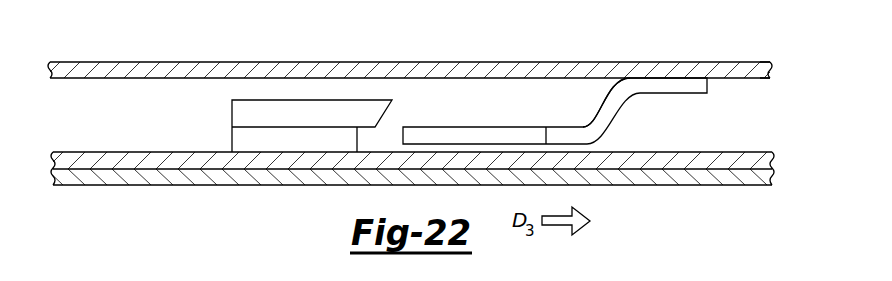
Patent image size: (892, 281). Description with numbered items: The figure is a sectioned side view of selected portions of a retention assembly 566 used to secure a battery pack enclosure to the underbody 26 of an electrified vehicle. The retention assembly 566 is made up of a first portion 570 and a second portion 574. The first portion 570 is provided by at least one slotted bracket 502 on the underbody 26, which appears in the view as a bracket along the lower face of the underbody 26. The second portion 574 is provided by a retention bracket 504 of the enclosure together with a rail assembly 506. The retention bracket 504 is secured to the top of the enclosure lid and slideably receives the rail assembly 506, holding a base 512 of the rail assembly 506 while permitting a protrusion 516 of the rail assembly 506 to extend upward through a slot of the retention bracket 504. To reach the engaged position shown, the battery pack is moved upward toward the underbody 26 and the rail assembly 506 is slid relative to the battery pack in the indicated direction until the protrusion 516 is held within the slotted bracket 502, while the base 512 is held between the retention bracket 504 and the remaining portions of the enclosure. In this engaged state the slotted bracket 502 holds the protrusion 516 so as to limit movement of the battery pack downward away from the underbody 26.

The underbody 26 is at (197, 60).
The retention assembly 566 is at (721, 54).
The base 512 is at (194, 175).
The retention bracket 504 is at (137, 162).
The rail assembly 506 is at (75, 175).
The protrusion 516 is at (288, 112).
The slotted bracket 502 is at (613, 107).
The first portion 570 is at (584, 111).
The second portion 574 is at (173, 120).